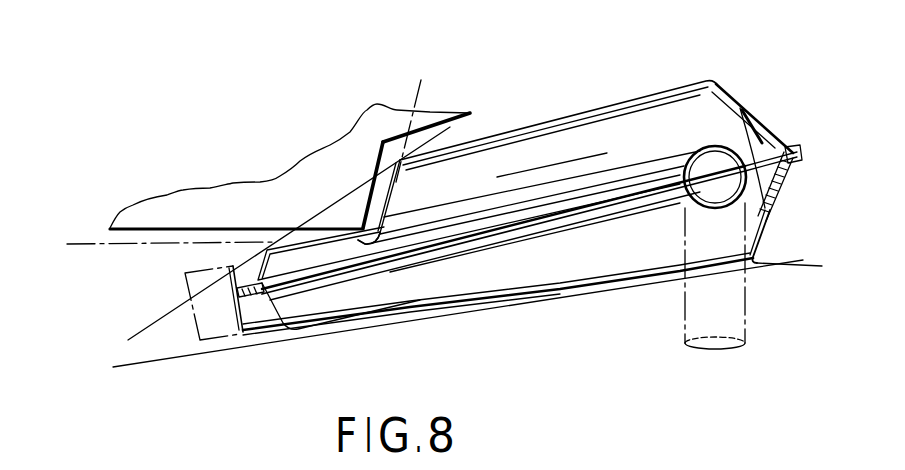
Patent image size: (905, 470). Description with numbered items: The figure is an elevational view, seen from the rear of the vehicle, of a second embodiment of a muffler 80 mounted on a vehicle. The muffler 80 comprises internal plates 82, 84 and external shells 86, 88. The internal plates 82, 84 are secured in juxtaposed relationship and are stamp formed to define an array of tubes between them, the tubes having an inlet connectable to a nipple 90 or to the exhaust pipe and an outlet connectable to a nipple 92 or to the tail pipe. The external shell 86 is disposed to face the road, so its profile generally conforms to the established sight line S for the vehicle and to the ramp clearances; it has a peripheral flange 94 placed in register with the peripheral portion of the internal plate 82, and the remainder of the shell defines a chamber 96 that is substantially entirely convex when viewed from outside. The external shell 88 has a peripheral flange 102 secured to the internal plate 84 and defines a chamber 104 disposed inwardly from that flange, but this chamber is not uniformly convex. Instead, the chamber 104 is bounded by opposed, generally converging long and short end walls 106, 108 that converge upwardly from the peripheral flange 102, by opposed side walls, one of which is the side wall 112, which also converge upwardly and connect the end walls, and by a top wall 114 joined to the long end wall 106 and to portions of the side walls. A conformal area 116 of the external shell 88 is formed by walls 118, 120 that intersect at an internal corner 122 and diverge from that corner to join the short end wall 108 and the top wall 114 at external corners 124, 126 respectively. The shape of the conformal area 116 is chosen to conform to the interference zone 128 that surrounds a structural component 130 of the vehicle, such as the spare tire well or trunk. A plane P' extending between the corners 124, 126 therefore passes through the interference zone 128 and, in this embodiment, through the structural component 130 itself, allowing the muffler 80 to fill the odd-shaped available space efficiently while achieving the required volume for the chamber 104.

The muffler 80 is at (483, 201).
The internal plate 82 is at (780, 180).
The internal plate 84 is at (764, 157).
The external shell 86 is at (559, 300).
The external shell 88 is at (563, 84).
The nipple 90 is at (220, 338).
The nipple 92 is at (684, 320).
The peripheral flange 94 is at (313, 283).
The chamber 96 is at (772, 205).
The peripheral flange 102 is at (468, 236).
The chamber 104 is at (756, 136).
The long end wall 106 is at (720, 88).
The short end wall 108 is at (237, 265).
The side wall 112 is at (662, 151).
The top wall 114 is at (600, 108).
The conformal area 116 is at (376, 193).
The wall 118 is at (320, 243).
The wall 120 is at (371, 170).
The internal corner 122 is at (366, 246).
The external corner 124 is at (270, 245).
The external corner 126 is at (400, 160).
The interference zone 128 is at (421, 90).
The structural component 130 is at (166, 196).
The sight line S is at (125, 364).
The plane P' is at (276, 233).